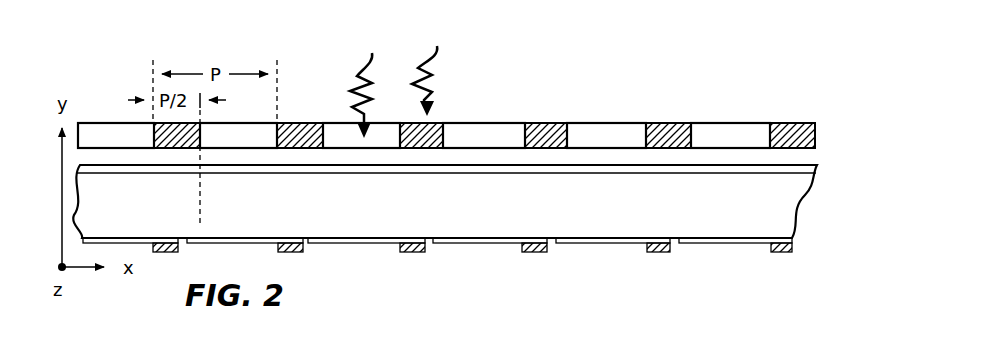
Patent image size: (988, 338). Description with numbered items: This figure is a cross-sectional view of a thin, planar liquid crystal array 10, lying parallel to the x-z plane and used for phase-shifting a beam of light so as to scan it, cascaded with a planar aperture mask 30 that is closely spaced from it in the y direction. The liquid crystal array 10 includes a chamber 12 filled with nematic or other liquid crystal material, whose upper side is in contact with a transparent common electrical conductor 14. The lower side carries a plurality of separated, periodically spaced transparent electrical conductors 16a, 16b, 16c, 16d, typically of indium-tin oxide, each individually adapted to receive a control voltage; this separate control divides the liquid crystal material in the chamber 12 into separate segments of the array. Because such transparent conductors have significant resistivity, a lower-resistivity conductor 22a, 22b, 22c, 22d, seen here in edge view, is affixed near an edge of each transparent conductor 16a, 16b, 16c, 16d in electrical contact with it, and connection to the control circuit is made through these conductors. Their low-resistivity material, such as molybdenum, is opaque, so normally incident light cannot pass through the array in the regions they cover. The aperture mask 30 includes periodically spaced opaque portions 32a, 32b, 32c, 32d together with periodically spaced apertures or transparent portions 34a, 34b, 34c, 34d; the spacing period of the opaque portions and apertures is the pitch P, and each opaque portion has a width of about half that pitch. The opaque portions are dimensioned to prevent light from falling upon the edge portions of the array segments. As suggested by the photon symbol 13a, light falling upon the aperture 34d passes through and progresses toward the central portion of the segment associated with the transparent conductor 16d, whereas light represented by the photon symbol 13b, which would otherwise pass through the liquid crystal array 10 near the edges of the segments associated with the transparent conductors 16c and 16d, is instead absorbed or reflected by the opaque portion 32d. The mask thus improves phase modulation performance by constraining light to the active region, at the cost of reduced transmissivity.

The liquid crystal array 10 is at (470, 177).
The chamber 12 is at (801, 194).
The photon symbol 13a is at (367, 85).
The photon symbol 13b is at (436, 72).
The transparent common electrical conductor 14 is at (818, 165).
The transparent electrical conductor 16a is at (712, 245).
The transparent electrical conductor 16b is at (611, 245).
The transparent electrical conductor 16c is at (460, 245).
The transparent electrical conductor 16d is at (356, 245).
The low resistivity conductor 22a is at (778, 254).
The low resistivity conductor 22b is at (659, 254).
The low resistivity conductor 22c is at (534, 254).
The low resistivity conductor 22d is at (413, 254).
The aperture mask 30 is at (447, 100).
The opaque portion 32a is at (778, 123).
The opaque portion 32b is at (658, 123).
The opaque portion 32c is at (529, 123).
The opaque portion 32d is at (431, 122).
The aperture 34a is at (722, 123).
The aperture 34b is at (590, 123).
The aperture 34c is at (487, 123).
The aperture 34d is at (333, 123).